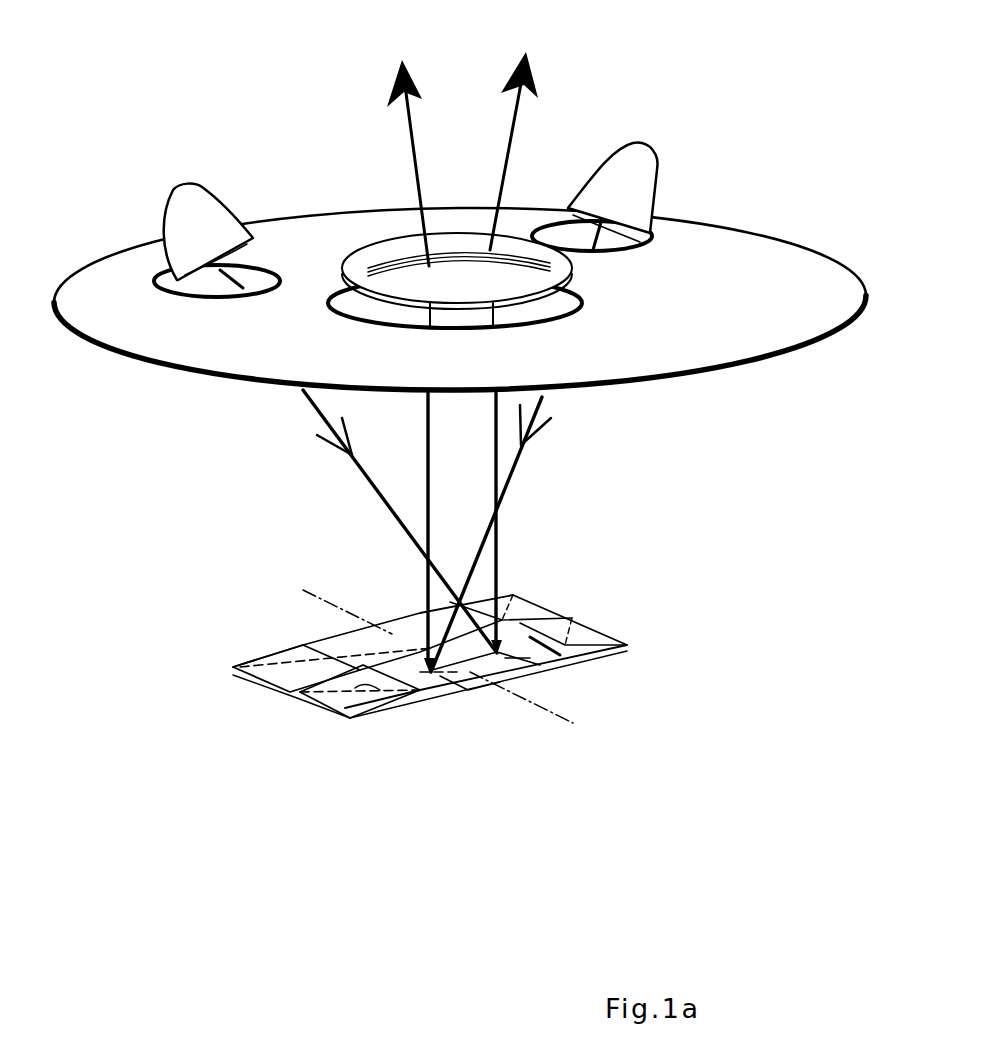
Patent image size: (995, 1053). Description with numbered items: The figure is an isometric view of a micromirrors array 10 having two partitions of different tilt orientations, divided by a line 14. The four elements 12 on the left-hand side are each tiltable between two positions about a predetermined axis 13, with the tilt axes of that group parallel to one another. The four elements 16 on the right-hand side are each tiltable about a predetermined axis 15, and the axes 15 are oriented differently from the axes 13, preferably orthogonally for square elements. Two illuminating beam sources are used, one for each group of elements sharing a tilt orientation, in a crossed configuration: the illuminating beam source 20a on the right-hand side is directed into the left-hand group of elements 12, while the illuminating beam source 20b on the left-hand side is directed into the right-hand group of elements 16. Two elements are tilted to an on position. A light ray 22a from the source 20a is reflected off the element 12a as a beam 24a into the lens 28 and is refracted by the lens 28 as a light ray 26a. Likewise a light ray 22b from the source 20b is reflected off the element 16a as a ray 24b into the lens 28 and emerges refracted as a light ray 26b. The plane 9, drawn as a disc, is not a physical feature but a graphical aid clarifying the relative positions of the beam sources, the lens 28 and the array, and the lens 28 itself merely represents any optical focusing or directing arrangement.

The plane 9 is at (822, 272).
The micromirrors array 10 is at (322, 772).
The elements 12 is at (297, 655).
The element 12a is at (452, 682).
The axis 13 is at (275, 668).
The line 14 is at (458, 668).
The axis 15 is at (573, 617).
The elements 16 is at (523, 598).
The element 16a is at (508, 658).
The illuminating beam source 20a is at (640, 167).
The illuminating beam source 20b is at (188, 200).
The light ray 22a is at (519, 457).
The light ray 22b is at (392, 512).
The beam 24a is at (428, 468).
The ray 24b is at (496, 466).
The light ray 26a is at (402, 143).
The light ray 26b is at (519, 129).
The lens 28 is at (548, 287).